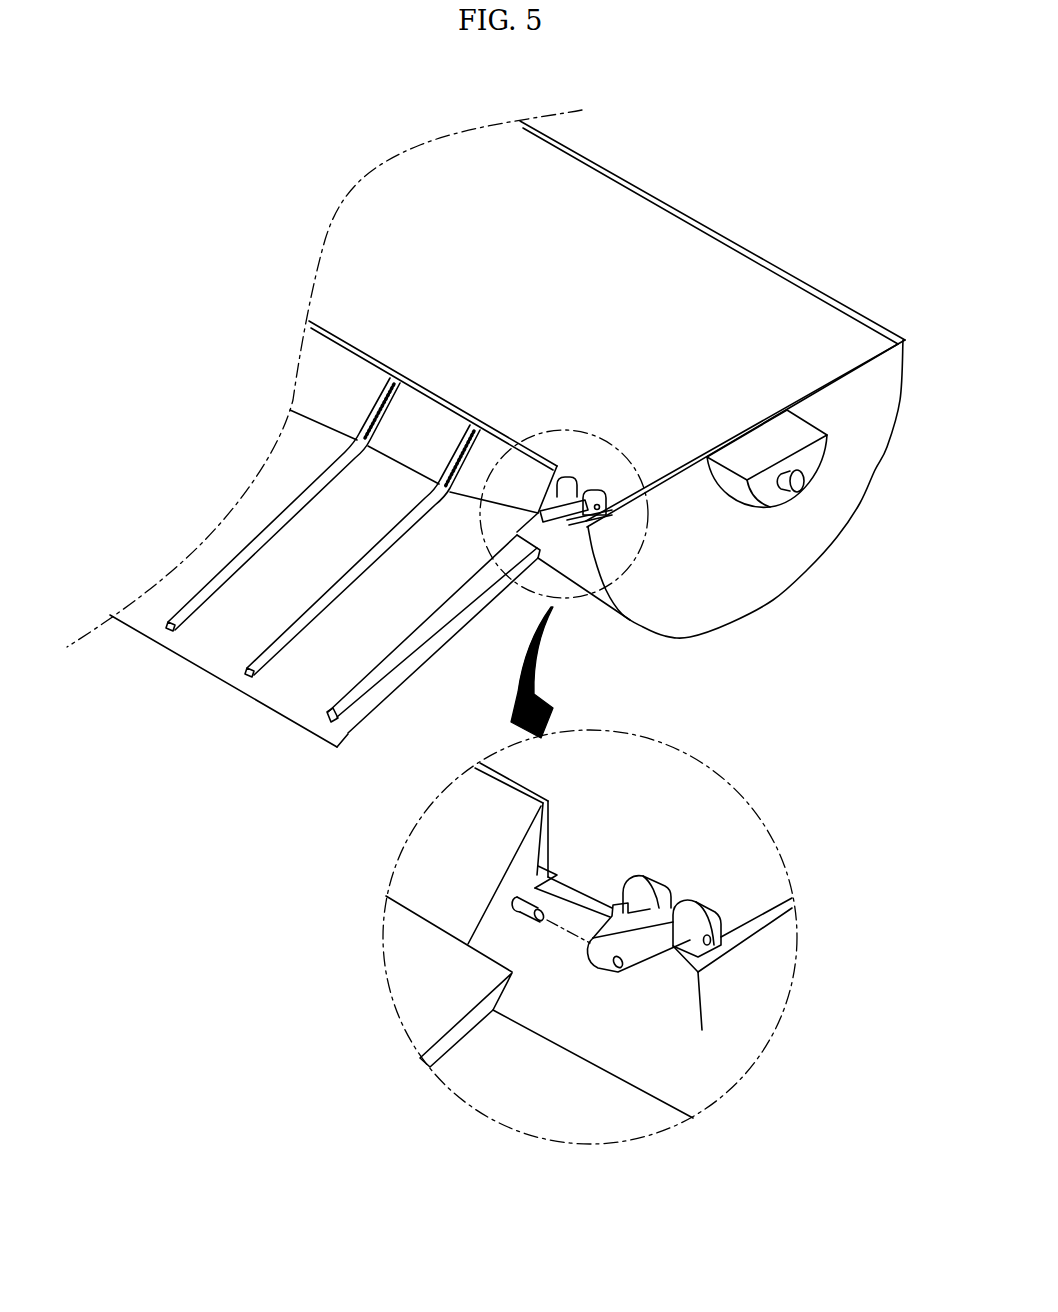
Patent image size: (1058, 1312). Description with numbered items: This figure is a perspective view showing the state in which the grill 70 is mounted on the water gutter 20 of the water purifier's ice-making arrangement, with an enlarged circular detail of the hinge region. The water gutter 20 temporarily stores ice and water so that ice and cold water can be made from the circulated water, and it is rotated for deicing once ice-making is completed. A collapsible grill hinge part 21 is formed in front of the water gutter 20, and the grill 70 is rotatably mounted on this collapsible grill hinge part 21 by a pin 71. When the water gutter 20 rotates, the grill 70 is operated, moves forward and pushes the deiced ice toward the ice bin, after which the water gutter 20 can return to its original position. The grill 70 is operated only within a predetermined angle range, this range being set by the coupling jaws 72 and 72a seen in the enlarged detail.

The water gutter 20 is at (827, 300).
The collapsible grill hinge part 21 is at (640, 952).
The grill 70 is at (200, 647).
The pin 71 is at (527, 923).
The coupling jaw 72 is at (622, 905).
The coupling jaw 72a is at (648, 876).